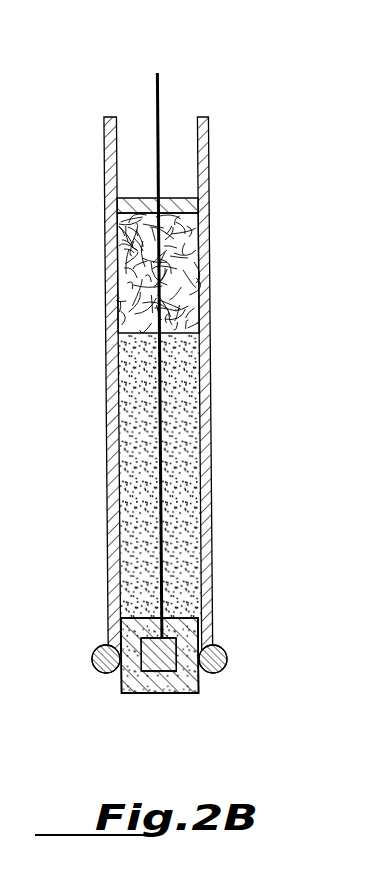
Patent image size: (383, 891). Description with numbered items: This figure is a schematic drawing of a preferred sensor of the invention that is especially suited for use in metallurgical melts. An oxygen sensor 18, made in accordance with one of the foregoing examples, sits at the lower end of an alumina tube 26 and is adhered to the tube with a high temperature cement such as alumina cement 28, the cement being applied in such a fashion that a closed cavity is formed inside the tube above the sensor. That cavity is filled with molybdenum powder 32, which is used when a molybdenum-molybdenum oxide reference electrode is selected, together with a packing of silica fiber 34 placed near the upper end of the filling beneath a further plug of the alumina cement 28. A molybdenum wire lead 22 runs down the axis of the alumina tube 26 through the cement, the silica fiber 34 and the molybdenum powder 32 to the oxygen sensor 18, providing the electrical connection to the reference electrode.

The oxygen sensor 18 is at (150, 693).
The molybdenum wire lead 22 is at (158, 88).
The alumina tube 26 is at (205, 413).
The alumina cement 28 is at (173, 198).
The molybdenum powder 32 is at (138, 428).
The silica fiber 34 is at (178, 278).